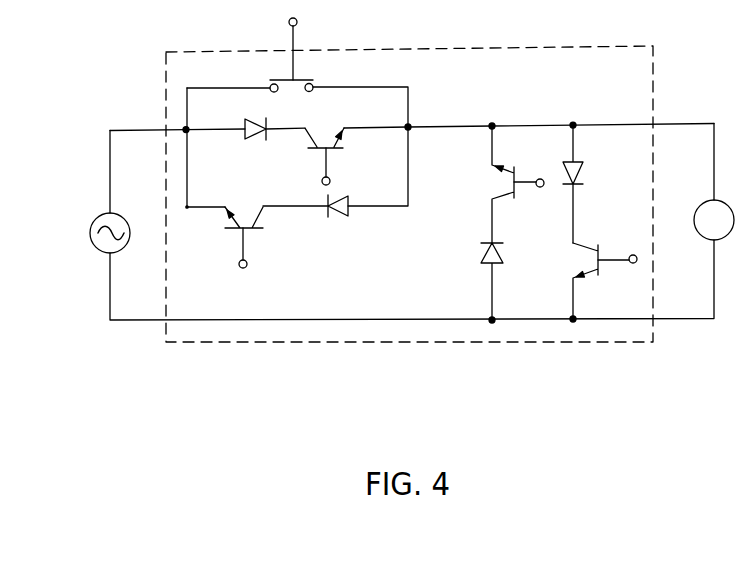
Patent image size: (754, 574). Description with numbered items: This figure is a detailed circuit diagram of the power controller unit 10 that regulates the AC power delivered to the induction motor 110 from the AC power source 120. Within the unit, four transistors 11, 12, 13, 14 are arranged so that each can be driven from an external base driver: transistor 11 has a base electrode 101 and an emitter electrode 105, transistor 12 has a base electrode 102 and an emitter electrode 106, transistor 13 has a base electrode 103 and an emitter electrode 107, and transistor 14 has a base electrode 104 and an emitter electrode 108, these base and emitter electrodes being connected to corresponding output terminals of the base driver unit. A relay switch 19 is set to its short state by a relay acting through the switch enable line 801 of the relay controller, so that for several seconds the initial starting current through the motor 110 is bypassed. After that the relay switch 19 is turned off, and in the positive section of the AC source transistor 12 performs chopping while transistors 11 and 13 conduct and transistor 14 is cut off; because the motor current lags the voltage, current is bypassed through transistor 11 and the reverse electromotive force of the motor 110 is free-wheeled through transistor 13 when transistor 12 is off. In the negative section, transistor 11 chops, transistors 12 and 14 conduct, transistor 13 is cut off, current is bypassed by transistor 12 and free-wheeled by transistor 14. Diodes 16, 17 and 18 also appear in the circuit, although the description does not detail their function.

The power controller unit 10 is at (527, 45).
The switch enable line 801 is at (294, 47).
The relay switch 19 is at (309, 76).
The diode 16 is at (257, 119).
The transistor 12 is at (326, 137).
The base electrode 102 is at (347, 176).
The transistor 11 is at (242, 212).
The base electrode 101 is at (247, 265).
The emitter electrode 105 is at (186, 209).
The emitter electrode 106 is at (411, 124).
The emitter electrode 107 is at (495, 123).
The emitter electrode 108 is at (576, 316).
The transistor 13 is at (500, 184).
The base electrode 103 is at (542, 179).
The diode 17 is at (503, 251).
The diode 18 is at (585, 176).
The transistor 14 is at (573, 262).
The base electrode 104 is at (635, 255).
The induction motor 110 is at (721, 201).
The AC power source 120 is at (126, 219).